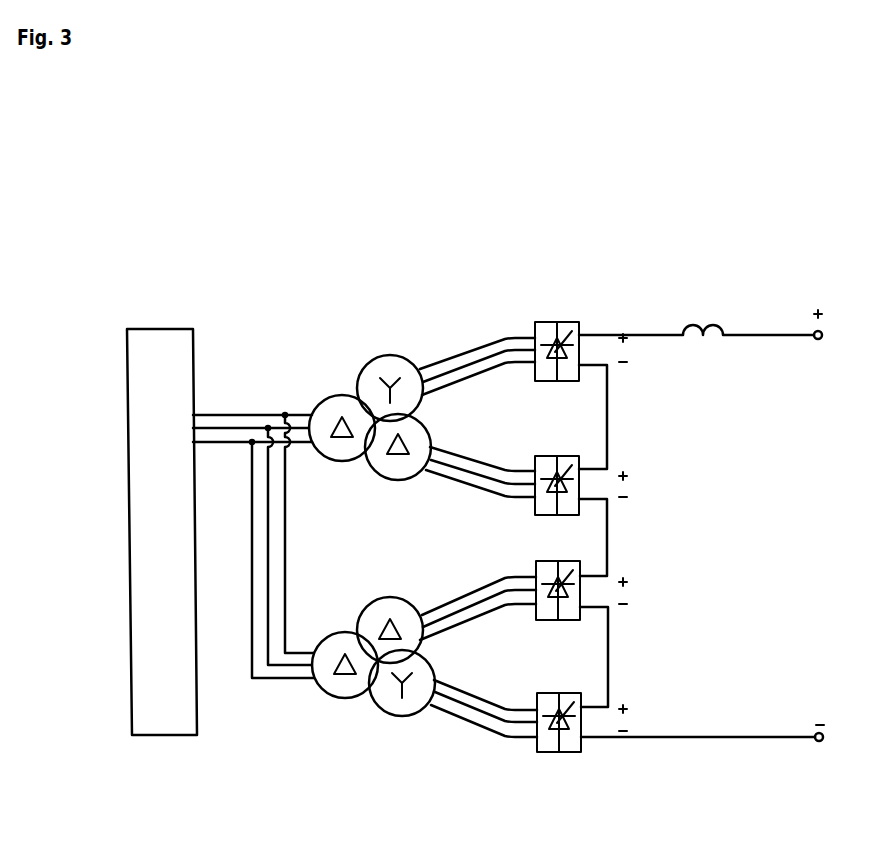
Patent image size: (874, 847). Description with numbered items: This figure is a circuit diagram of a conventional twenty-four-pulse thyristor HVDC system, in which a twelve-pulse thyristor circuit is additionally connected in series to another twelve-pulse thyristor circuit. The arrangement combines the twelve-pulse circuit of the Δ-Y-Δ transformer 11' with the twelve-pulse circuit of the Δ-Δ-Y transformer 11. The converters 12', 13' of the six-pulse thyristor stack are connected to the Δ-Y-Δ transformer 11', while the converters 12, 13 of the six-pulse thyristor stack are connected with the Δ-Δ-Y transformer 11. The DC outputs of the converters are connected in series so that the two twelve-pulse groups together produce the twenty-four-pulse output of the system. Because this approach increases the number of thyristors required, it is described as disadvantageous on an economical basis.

The Δ-Y-Δ transformer 11' is at (370, 383).
The converter 12' is at (576, 317).
The converter 13' is at (547, 457).
The Δ-Δ-Y transformer 11 is at (375, 621).
The converter 12 is at (540, 565).
The converter 13 is at (543, 695).